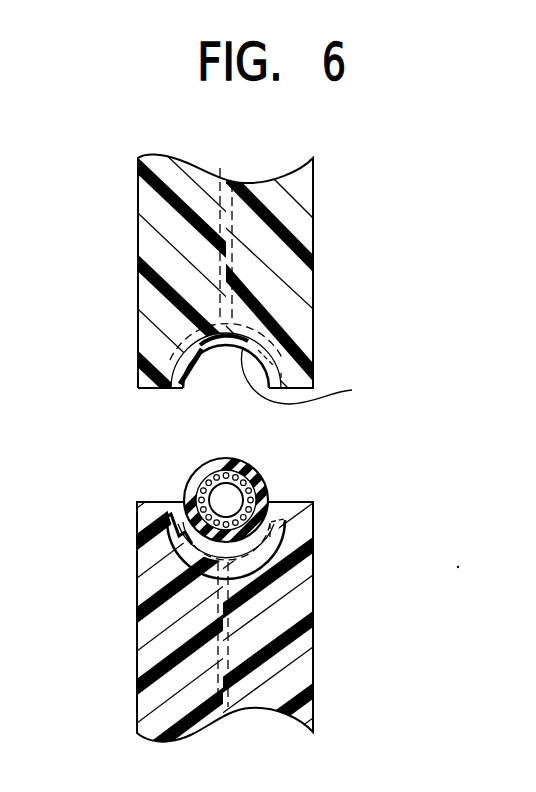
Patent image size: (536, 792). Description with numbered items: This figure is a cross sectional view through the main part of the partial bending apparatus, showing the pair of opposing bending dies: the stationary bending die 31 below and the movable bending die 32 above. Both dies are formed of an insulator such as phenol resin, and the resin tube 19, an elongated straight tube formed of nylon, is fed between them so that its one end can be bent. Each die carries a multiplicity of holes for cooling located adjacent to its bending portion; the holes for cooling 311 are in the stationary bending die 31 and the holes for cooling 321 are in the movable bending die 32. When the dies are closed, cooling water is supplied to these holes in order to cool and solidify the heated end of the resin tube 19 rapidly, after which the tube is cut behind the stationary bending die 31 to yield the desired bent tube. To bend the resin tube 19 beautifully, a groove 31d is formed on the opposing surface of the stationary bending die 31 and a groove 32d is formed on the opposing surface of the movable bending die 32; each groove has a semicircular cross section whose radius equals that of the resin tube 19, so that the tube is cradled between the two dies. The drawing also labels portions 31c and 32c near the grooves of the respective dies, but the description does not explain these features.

The movable bending die 32 is at (137, 273).
The hole for cooling 321 is at (264, 346).
The arcuate seat portion 32c is at (280, 344).
The groove 32d is at (322, 375).
The stationary bending die 31 is at (137, 638).
The groove 31d is at (192, 488).
The groove 31c is at (262, 545).
The hole for cooling 311 is at (198, 542).
The resin tube 19 is at (255, 471).